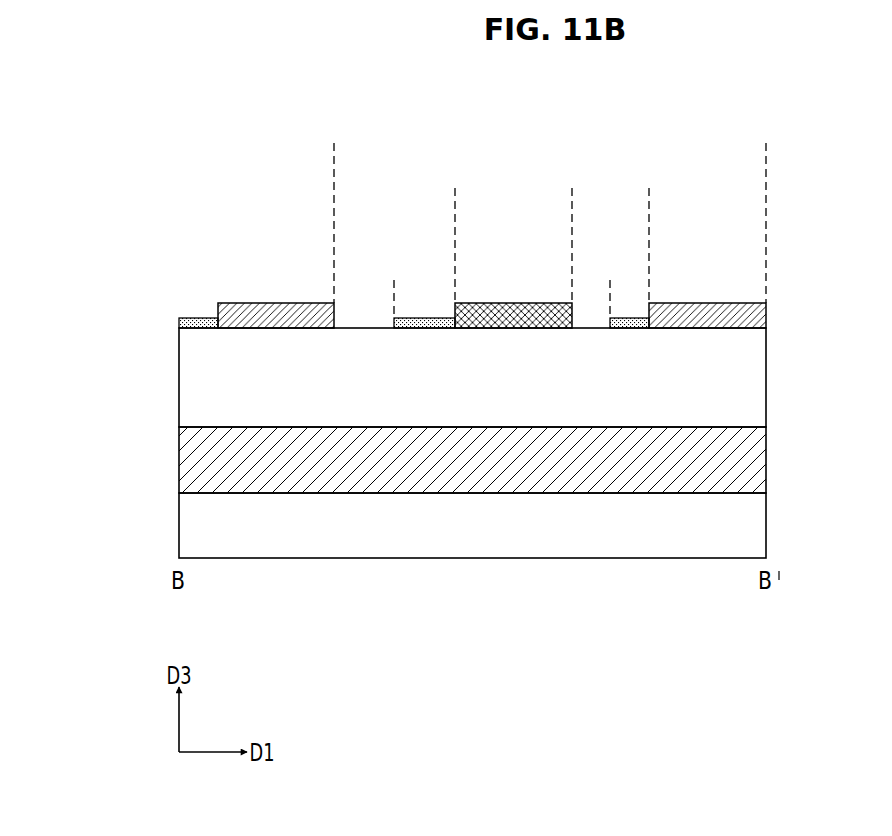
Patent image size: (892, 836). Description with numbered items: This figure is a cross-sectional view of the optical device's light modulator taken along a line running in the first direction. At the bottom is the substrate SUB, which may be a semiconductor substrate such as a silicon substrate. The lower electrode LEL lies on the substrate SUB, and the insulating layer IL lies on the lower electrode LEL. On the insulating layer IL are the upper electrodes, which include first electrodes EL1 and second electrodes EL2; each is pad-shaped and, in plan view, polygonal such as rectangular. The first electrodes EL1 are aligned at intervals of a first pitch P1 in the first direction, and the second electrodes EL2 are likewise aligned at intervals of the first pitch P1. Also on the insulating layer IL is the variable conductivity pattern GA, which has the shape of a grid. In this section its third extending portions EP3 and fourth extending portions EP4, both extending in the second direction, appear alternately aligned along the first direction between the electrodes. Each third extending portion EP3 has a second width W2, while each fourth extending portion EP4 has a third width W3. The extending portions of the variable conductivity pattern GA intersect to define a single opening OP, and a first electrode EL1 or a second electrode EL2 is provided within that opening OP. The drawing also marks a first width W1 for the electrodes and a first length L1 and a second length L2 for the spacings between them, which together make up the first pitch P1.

The substrate SUB is at (192, 525).
The lower electrode LEL is at (192, 450).
The insulating layer IL is at (192, 395).
The third extending portion EP3 is at (198, 328).
The fourth extending portion EP4 is at (433, 326).
The first electrode EL1 is at (267, 303).
The second electrode EL2 is at (503, 303).
The opening OP is at (610, 330).
The variable conductivity pattern GA is at (223, 621).
The first pitch P1 is at (766, 152).
The first length L1 is at (649, 195).
The second length L2 is at (334, 195).
The first width W1 is at (572, 218).
The second width W2 is at (610, 288).
The third width W3 is at (394, 288).